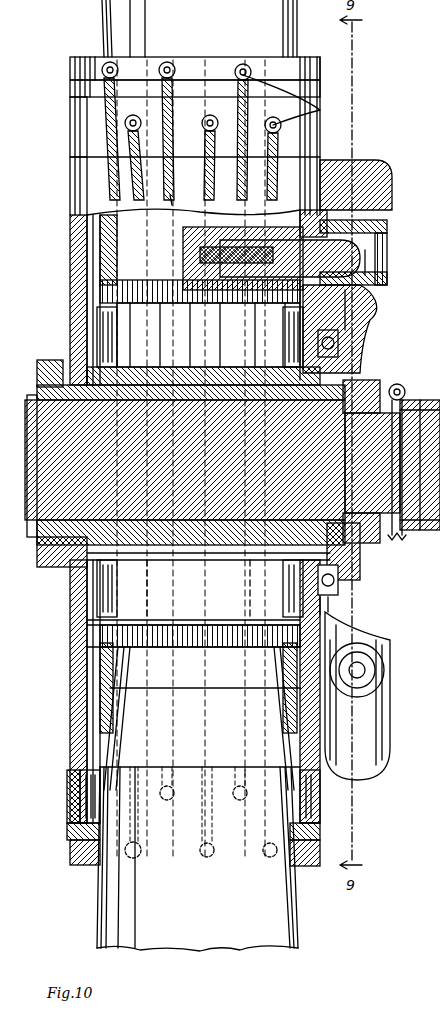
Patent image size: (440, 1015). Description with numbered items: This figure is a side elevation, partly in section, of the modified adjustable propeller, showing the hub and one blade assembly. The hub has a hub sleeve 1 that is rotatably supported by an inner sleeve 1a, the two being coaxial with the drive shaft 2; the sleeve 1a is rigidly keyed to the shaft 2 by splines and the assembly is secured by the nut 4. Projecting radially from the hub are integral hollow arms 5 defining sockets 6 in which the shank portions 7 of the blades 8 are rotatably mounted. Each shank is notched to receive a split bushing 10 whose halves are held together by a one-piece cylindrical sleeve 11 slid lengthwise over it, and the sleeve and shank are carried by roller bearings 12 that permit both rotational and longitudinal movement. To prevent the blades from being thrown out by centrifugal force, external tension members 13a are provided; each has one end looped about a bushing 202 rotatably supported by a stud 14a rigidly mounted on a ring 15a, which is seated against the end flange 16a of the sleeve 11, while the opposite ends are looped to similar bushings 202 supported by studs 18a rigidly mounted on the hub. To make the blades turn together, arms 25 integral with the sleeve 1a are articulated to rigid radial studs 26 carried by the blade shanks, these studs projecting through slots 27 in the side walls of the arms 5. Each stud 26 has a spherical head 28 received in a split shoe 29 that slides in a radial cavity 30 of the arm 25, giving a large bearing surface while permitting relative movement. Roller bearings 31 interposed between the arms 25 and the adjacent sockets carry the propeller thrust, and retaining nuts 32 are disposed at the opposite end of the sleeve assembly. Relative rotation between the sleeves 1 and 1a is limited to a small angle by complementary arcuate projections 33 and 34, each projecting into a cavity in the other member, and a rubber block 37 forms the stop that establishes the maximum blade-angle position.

The hub sleeve 1 is at (140, 565).
The sleeve 1a is at (250, 565).
The shaft 2 is at (32, 383).
The nut 4 is at (413, 398).
The hollow arms 5 is at (78, 183).
The sockets 6 is at (85, 265).
The shank portions 7 is at (200, 553).
The blades 8 is at (103, 3).
The split bushing 10 is at (100, 250).
The cylindrical sleeve 11 is at (100, 237).
The roller bearings 12 is at (100, 332).
The tension members 13a is at (195, 167).
The studs 14a is at (108, 62).
The ring 15a is at (82, 66).
The end flange 16a is at (80, 88).
The studs 18a is at (206, 124).
The arms 25 is at (360, 305).
The radial studs 26 is at (300, 212).
The slots 27 is at (357, 322).
The spherical head 28 is at (375, 246).
The split shoe 29 is at (368, 266).
The radial cavity 30 is at (382, 284).
The roller bearings 31 is at (345, 577).
The retaining nuts 32 is at (58, 567).
The arcuate projection 33 is at (345, 342).
The arcuate projection 34 is at (335, 622).
The rubber block 37 is at (370, 162).
The bushing 202 is at (320, 110).